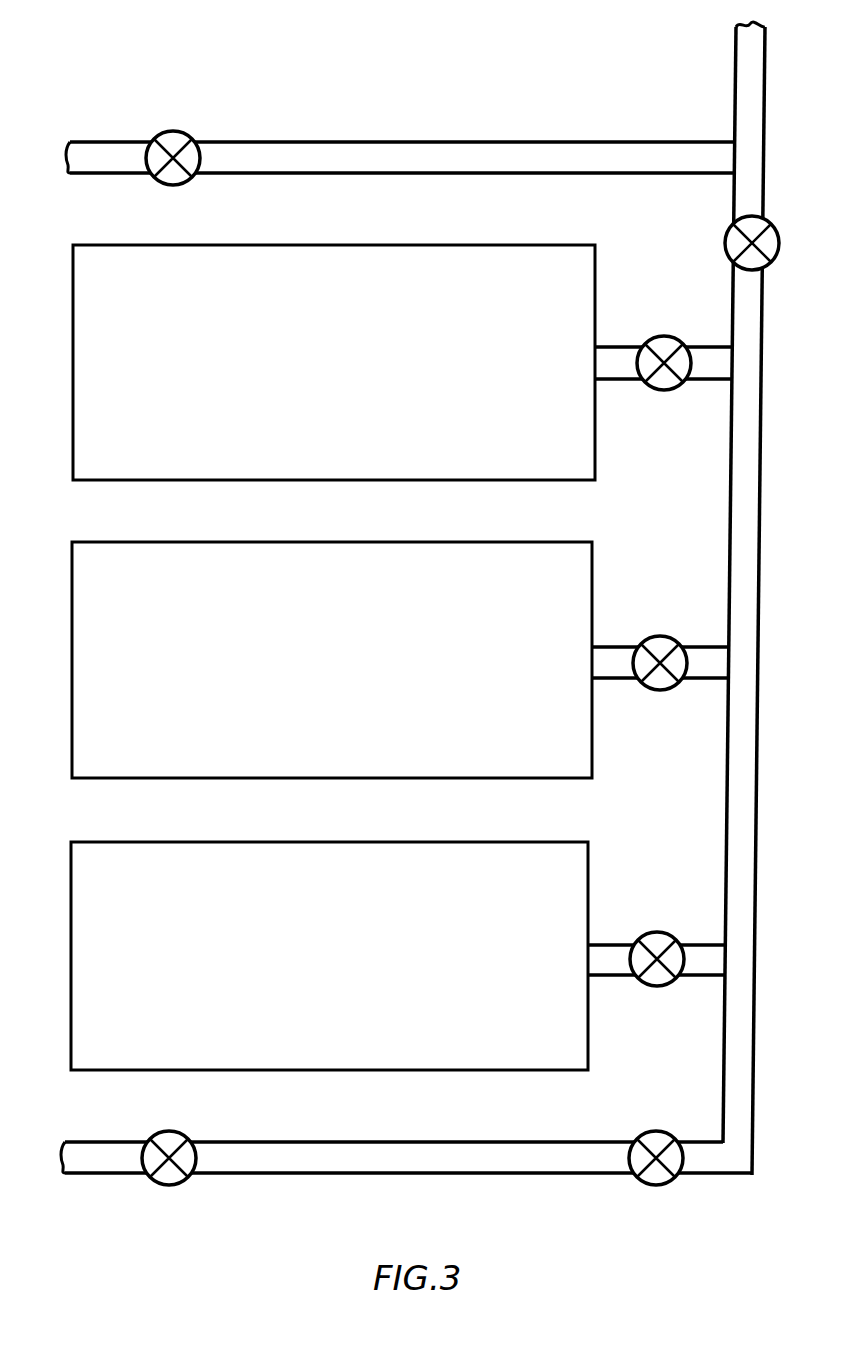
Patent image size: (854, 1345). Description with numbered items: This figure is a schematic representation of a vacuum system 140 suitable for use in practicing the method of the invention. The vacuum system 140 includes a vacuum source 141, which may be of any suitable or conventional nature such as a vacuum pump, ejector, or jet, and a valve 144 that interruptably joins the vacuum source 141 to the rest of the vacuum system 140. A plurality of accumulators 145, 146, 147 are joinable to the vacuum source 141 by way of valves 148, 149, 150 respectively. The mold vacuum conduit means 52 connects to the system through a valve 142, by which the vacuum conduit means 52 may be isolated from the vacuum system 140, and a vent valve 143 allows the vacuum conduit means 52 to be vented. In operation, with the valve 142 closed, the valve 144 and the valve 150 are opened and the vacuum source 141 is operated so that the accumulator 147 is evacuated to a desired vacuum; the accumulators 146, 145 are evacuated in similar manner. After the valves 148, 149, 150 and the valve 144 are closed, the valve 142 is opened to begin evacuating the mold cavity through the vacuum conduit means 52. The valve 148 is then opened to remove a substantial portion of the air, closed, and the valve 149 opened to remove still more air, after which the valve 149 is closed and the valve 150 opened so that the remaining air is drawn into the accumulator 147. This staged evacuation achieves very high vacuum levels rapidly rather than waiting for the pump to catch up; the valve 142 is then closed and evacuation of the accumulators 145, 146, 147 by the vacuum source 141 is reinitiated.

The vacuum conduit means 52 is at (742, 41).
The vacuum system 140 is at (322, 103).
The vacuum source 141 is at (165, 1186).
The valve 142 is at (725, 243).
The vent valve 143 is at (175, 130).
The valve 144 is at (645, 1186).
The accumulator 145 is at (206, 304).
The accumulator 146 is at (202, 600).
The accumulator 147 is at (215, 899).
The valve 148 is at (655, 390).
The valve 149 is at (652, 690).
The valve 150 is at (648, 985).